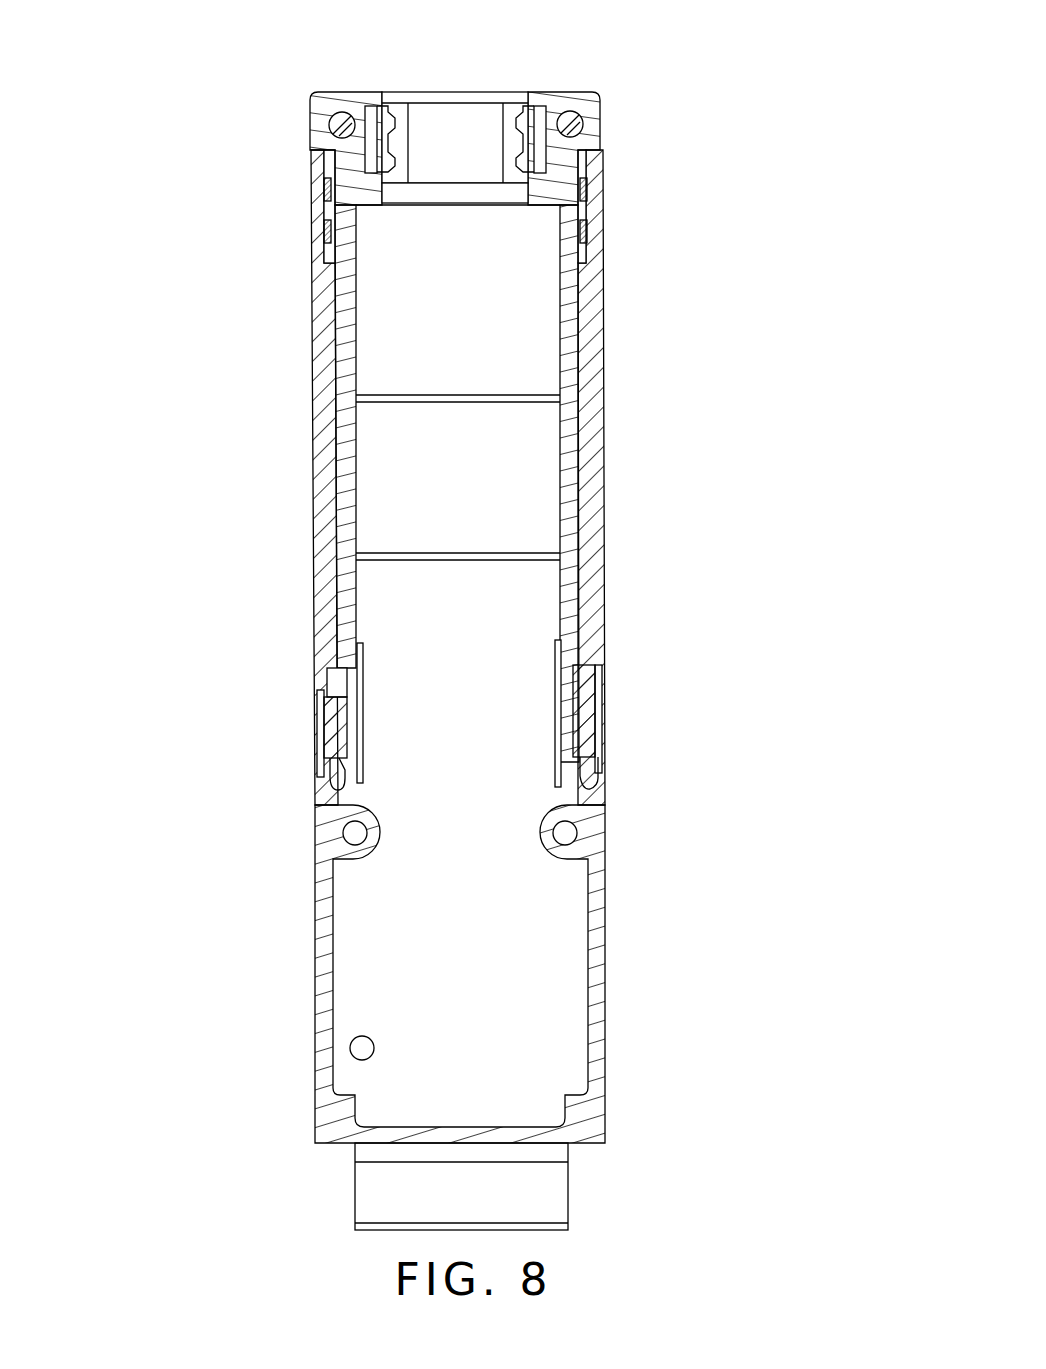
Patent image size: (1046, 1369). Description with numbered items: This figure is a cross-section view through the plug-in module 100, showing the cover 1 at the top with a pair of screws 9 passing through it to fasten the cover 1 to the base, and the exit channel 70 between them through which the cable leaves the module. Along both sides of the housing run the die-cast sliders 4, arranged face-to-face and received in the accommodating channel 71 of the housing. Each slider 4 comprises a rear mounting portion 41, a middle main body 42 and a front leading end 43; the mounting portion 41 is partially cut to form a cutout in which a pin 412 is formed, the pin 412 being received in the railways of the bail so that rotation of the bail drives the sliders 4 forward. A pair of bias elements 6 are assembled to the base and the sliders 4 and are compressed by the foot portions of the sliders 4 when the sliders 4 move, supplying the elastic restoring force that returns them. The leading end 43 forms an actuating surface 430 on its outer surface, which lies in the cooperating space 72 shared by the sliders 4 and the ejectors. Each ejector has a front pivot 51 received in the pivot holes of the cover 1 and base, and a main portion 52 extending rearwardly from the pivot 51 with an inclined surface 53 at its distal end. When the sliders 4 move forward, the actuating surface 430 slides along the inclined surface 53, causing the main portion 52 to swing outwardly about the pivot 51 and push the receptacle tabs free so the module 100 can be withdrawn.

The plug-in module 100 is at (434, 25).
The cover 1 is at (600, 118).
The screw 9 is at (337, 118).
The exit channel 70 is at (473, 127).
The slider 4 is at (592, 340).
The mounting portion 41 is at (320, 190).
The pin 412 is at (588, 193).
The bias element 6 is at (585, 225).
The main body 42 is at (322, 357).
The leading end 43 is at (337, 683).
The actuating surface 430 is at (337, 702).
The accommodating channel 71 is at (334, 670).
The cooperating space 72 is at (318, 720).
The pivot 51 is at (590, 787).
The main portion 52 is at (583, 718).
The inclined surface 53 is at (587, 680).